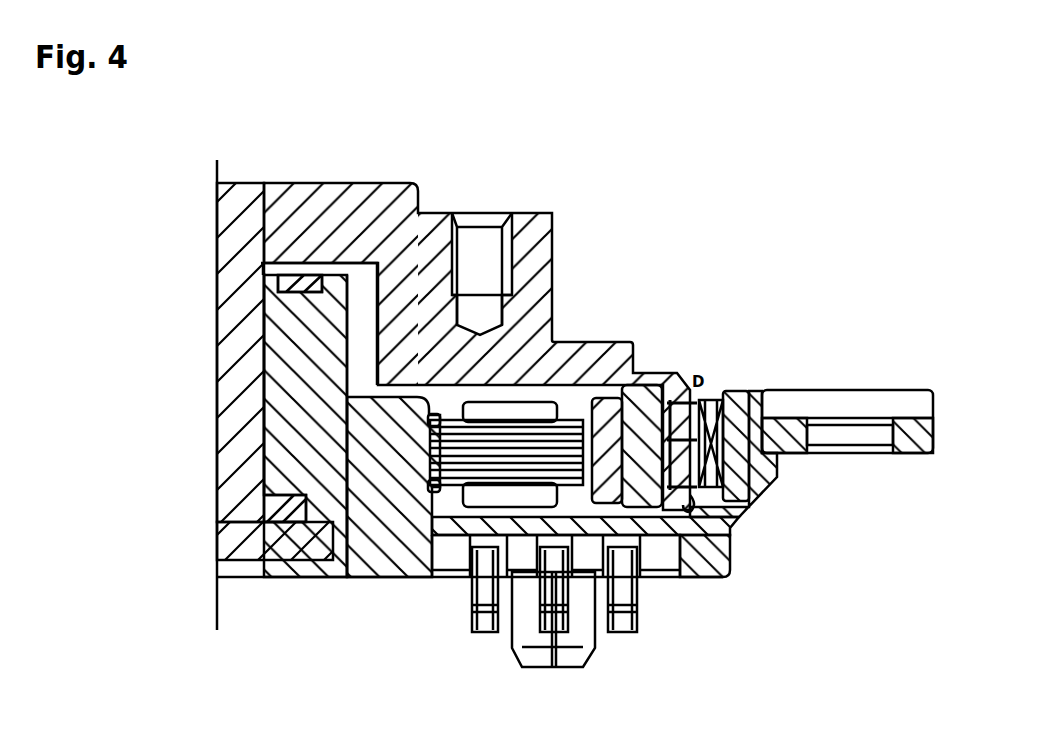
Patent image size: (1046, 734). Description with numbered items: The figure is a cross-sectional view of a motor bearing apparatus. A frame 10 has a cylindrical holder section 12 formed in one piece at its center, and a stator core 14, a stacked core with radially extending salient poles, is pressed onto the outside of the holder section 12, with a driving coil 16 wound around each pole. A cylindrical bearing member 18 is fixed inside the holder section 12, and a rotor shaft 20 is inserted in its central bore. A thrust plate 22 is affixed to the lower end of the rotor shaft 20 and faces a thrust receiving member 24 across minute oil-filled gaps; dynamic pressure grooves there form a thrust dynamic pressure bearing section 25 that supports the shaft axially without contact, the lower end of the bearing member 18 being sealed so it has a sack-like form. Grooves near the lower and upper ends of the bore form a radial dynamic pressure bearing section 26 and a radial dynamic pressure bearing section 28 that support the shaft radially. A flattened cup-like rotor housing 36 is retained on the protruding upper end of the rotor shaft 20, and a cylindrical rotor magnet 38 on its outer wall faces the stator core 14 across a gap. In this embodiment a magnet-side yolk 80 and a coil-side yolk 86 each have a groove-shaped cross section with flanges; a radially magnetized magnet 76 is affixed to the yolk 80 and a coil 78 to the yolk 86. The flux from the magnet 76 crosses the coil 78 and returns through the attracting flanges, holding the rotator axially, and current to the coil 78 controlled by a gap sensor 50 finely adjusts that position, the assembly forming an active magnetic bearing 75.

The frame 10 is at (728, 557).
The holder section 12 is at (392, 485).
The stator core 14 is at (532, 437).
The driving coil 16 is at (508, 410).
The bearing member 18 is at (292, 412).
The rotor shaft 20 is at (233, 222).
The thrust plate 22 is at (276, 510).
The thrust receiving member 24 is at (230, 549).
The thrust dynamic pressure bearing section 25 is at (283, 527).
The radial dynamic pressure bearing section 26 is at (262, 458).
The radial dynamic pressure bearing section 28 is at (263, 358).
The rotor housing 36 is at (520, 235).
The rotor magnet 38 is at (612, 398).
The gap sensor 50 is at (318, 262).
The active magnetic bearing 75 is at (765, 475).
The magnet 76 is at (709, 400).
The coil 78 is at (745, 402).
The magnet-side yolk 80 is at (668, 398).
The coil-side yolk 86 is at (753, 392).